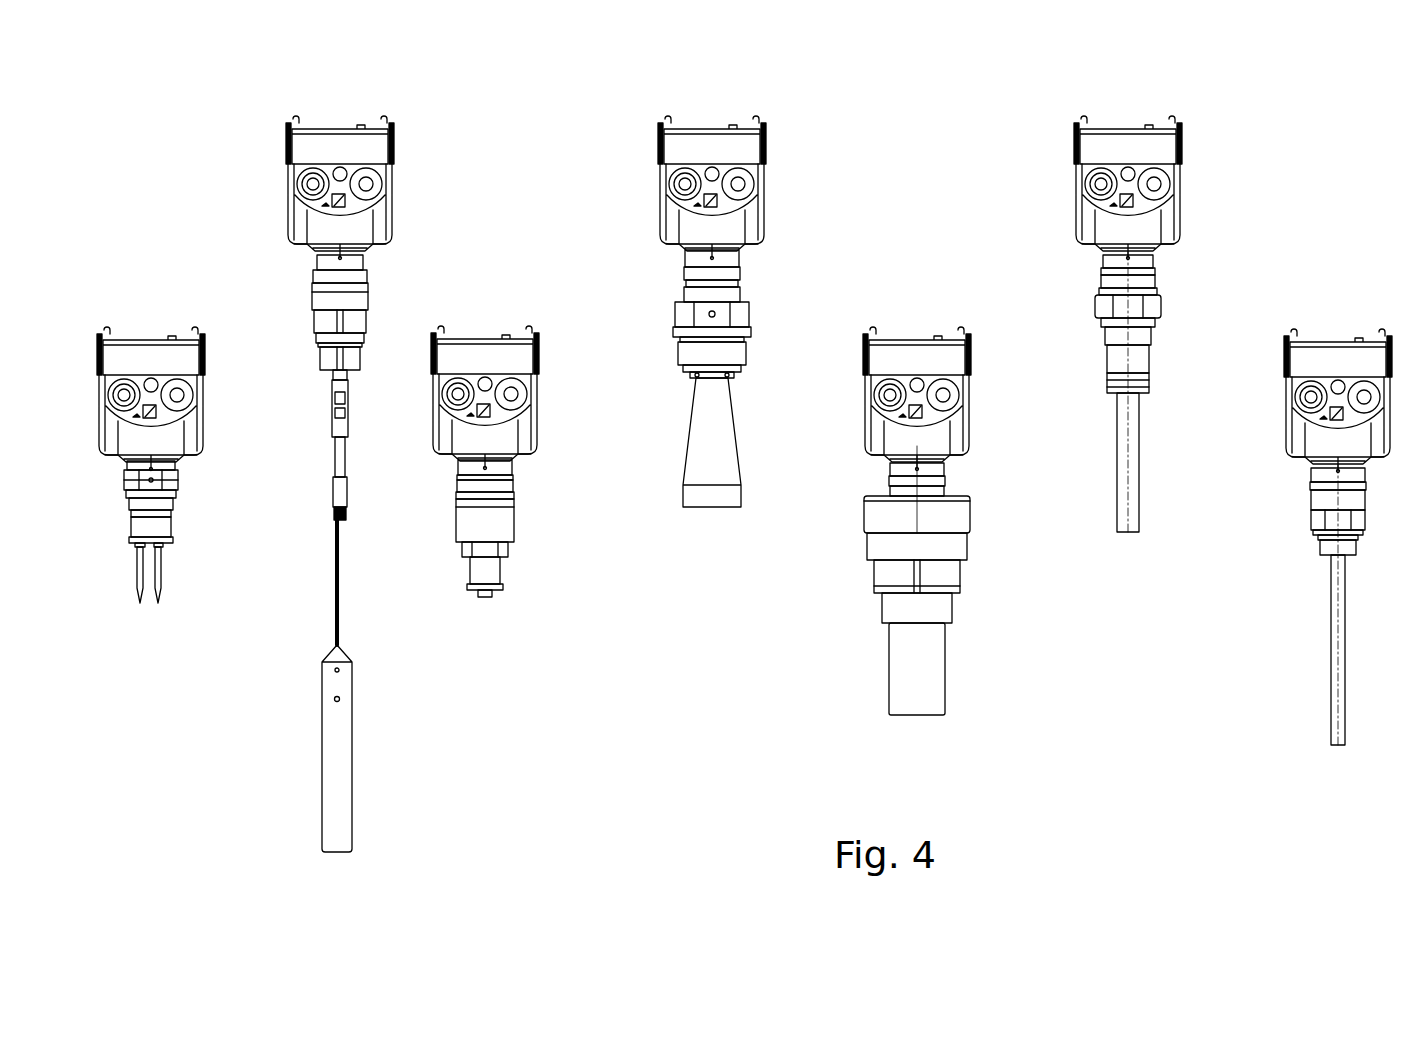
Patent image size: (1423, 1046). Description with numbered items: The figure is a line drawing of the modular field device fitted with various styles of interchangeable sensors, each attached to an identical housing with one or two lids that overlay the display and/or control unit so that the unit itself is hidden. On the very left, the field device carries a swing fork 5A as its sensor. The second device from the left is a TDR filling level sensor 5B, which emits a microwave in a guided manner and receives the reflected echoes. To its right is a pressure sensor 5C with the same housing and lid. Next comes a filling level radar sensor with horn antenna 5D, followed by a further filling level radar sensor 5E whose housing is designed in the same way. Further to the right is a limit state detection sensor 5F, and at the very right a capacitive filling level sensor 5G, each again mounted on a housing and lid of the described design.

The swing fork 5A is at (158, 528).
The TDR filling level sensor 5B is at (340, 777).
The pressure sensor 5C is at (502, 522).
The filling level radar sensor/horn antenna 5D is at (718, 447).
The filling level radar sensor 5E is at (932, 685).
The limit state detection sensor 5F is at (1128, 532).
The capacitive filling level sensor 5G is at (1332, 670).